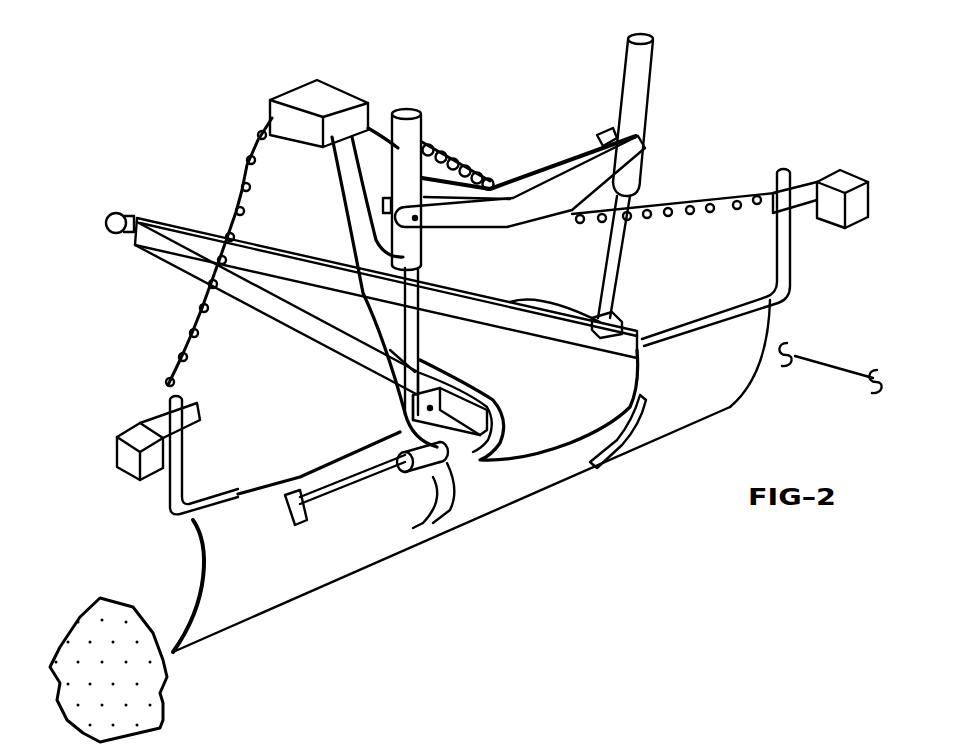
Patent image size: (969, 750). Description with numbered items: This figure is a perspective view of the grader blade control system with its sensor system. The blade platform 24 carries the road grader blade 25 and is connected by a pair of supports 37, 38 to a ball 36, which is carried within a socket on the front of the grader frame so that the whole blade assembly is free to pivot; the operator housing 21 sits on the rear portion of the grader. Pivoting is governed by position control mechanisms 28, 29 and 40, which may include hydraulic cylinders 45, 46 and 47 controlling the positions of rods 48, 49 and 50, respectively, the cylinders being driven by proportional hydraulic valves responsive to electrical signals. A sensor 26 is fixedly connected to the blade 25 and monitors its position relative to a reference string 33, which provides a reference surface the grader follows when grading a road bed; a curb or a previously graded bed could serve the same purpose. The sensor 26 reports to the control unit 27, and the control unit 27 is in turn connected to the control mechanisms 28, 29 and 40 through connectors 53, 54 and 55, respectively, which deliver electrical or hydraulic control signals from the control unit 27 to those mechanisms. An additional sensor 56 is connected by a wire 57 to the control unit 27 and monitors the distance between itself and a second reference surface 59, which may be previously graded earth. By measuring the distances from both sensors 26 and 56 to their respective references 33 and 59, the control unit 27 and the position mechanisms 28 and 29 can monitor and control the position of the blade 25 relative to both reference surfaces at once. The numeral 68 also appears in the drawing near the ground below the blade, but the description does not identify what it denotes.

The operator housing 21 is at (518, 523).
The blade platform 24 is at (577, 410).
The road grader blade 25 is at (370, 572).
The sensor 26 is at (848, 238).
The control unit 27 is at (330, 80).
The position control mechanism 28 is at (420, 108).
The position control mechanism 29 is at (660, 50).
The reference string 33 is at (810, 367).
The ball 36 is at (125, 213).
The support 37 is at (280, 330).
The support 38 is at (298, 252).
The position control mechanism 40 is at (420, 480).
The hydraulic cylinder 45 is at (418, 248).
The hydraulic cylinder 46 is at (650, 132).
The hydraulic cylinder 47 is at (402, 434).
The rod 48 is at (420, 342).
The rod 49 is at (625, 262).
The rod 50 is at (353, 497).
The connector 53 is at (345, 186).
The connector 54 is at (580, 162).
The connector 55 is at (375, 315).
The additional sensor 56 is at (117, 447).
The wire 57 is at (248, 165).
The second reference surface 59 is at (166, 700).
The ground 68 is at (298, 749).